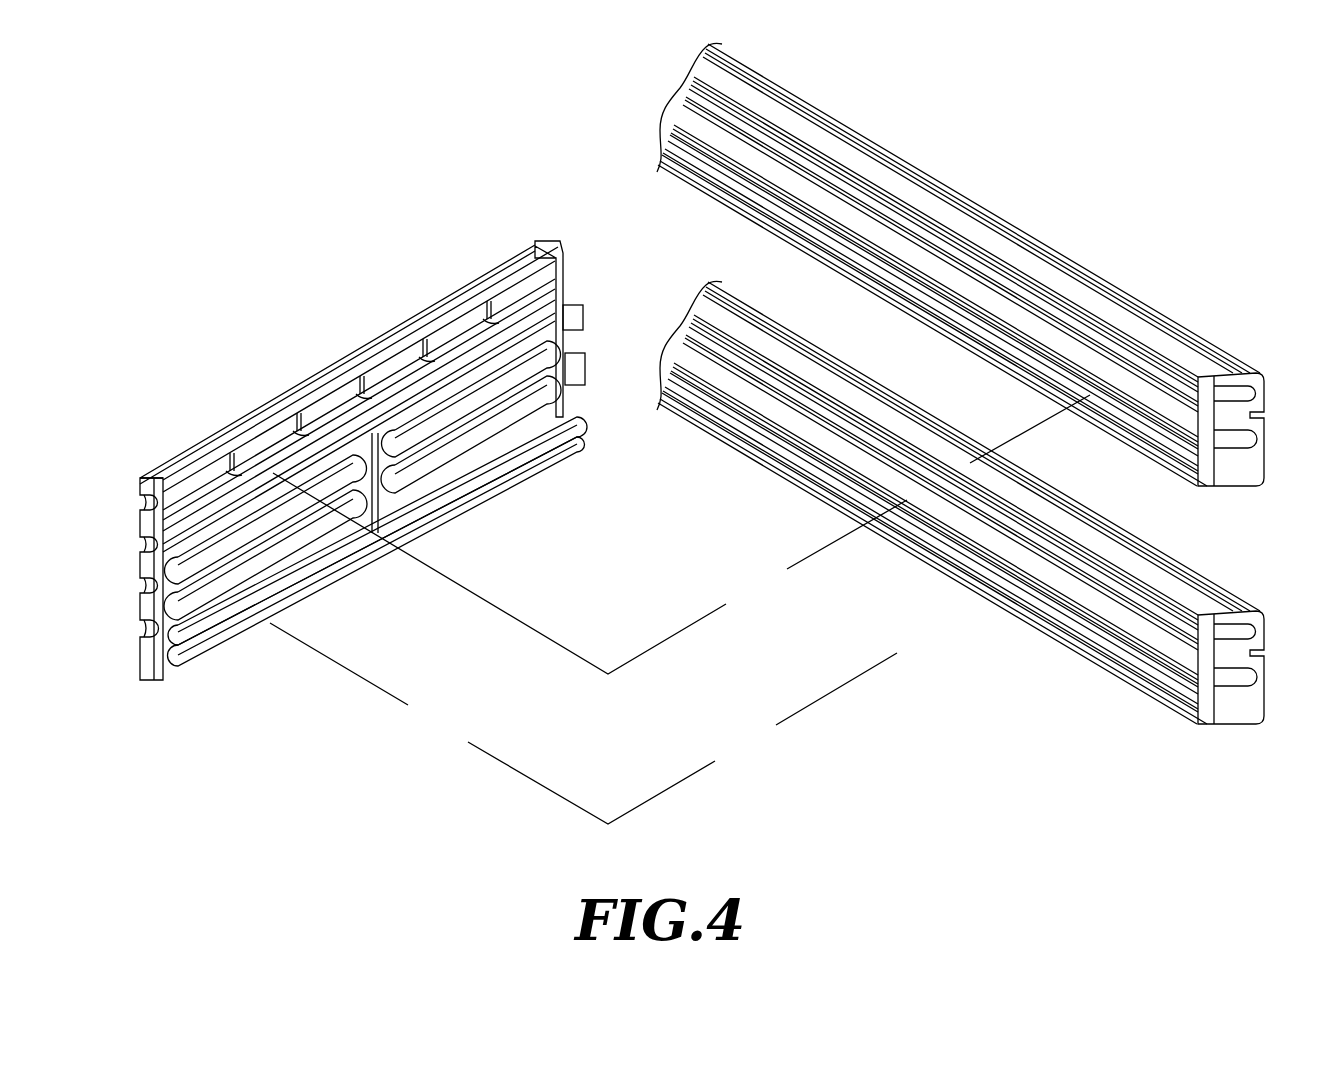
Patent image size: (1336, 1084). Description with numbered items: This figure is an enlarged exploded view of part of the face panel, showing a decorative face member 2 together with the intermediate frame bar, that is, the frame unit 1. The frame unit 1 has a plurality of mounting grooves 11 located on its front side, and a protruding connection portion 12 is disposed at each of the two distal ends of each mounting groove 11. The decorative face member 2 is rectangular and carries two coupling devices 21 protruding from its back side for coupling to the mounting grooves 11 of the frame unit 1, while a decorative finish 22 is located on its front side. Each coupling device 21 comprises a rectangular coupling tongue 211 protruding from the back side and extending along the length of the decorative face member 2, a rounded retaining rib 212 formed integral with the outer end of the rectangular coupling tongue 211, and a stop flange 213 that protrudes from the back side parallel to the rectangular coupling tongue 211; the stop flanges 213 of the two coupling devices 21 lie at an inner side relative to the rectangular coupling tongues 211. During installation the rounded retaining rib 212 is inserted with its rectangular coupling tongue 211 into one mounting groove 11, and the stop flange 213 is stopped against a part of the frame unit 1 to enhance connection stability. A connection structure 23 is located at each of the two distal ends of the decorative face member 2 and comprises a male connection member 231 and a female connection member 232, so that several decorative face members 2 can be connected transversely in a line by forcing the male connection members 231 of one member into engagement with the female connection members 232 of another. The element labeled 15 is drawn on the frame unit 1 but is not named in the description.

The frame unit 1 is at (994, 383).
The mounting groove 11 is at (1133, 423).
The protruding connection portion 12 is at (1257, 440).
The rail top groove 15 is at (1105, 300).
The decorative face member 2 is at (361, 422).
The coupling device 21 is at (409, 415).
The rectangular coupling tongue 211 is at (522, 307).
The rounded retaining rib 212 is at (483, 330).
The stop flange 213 is at (552, 318).
The decorative finish 22 is at (131, 523).
The connection structure 23 is at (599, 325).
The male connection member 231 is at (587, 366).
The female connection member 232 is at (563, 345).